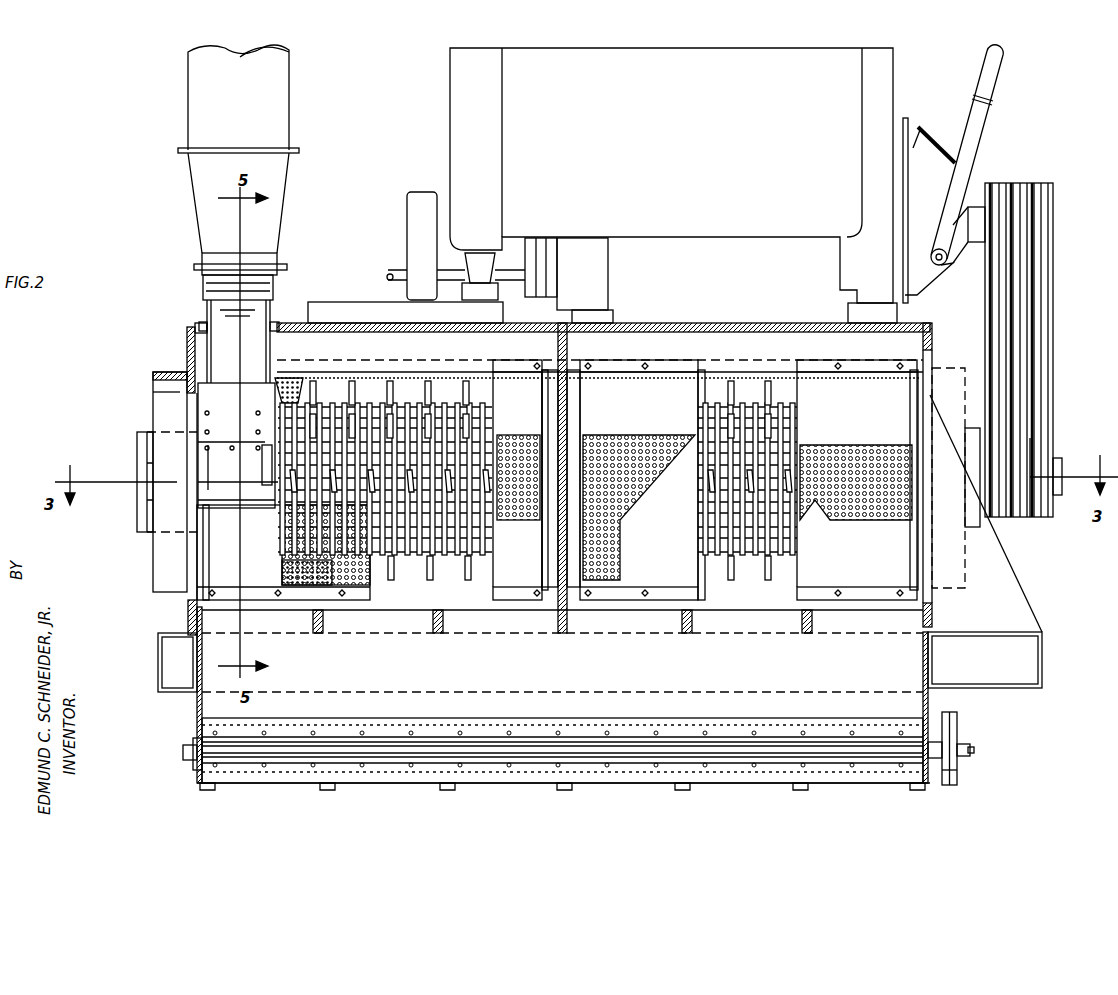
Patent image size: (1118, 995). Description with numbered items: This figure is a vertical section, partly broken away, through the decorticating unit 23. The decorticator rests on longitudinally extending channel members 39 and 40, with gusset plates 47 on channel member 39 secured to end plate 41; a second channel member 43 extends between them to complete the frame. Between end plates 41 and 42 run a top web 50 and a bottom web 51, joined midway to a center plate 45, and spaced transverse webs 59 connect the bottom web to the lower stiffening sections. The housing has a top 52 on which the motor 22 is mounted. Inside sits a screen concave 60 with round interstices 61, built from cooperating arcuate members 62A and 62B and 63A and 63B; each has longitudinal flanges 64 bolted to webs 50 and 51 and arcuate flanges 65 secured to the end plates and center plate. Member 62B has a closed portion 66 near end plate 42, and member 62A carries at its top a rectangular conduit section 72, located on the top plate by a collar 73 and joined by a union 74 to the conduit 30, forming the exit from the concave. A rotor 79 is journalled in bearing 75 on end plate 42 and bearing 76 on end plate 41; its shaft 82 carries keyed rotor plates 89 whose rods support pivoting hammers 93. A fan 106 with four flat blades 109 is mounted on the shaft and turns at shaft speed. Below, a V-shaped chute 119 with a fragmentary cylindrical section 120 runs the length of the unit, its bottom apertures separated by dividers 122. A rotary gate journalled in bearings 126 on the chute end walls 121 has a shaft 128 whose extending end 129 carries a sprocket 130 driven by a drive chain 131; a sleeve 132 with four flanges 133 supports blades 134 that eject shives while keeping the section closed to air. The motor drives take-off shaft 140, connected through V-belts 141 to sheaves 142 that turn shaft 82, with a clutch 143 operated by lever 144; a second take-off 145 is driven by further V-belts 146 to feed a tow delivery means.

The motor 22 is at (679, 185).
The decorticating unit 23 is at (752, 322).
The conduit 30 is at (290, 118).
The channel member 39 is at (1043, 657).
The channel member 40 is at (157, 670).
The end plate 41 is at (935, 352).
The end plate 42 is at (185, 340).
The channel member 43 is at (565, 690).
The center plate 45 is at (569, 348).
The gusset plate 47 is at (1013, 588).
The top web 50 is at (853, 340).
The bottom web 51 is at (779, 596).
The top 52 is at (697, 323).
The transverse web 59 is at (323, 622).
The screen concave 60 is at (857, 480).
The interstices 61 is at (515, 438).
The arcuate member 62A is at (297, 386).
The arcuate member 62B is at (517, 480).
The arcuate member 63A is at (710, 388).
The arcuate member 63B is at (639, 480).
The longitudinal flange 64 is at (478, 360).
The arcuate flange 65 is at (210, 540).
The closed portion 66 is at (283, 552).
The conduit section 72 is at (272, 290).
The collar 73 is at (270, 313).
The union 74 is at (285, 265).
The bearing 75 is at (150, 530).
The bearing 76 is at (970, 427).
The rotor 79 is at (403, 408).
The shaft 82 is at (1050, 458).
The rotor plate 89 is at (440, 396).
The hammer 93 is at (383, 385).
The fan 106 is at (222, 470).
The fan blade 109 is at (250, 380).
The chute 119 is at (562, 651).
The fragmentary cylindrical section 120 is at (197, 784).
The end wall 121 is at (935, 682).
The divider 122 is at (330, 790).
The bearing 126 is at (190, 766).
The shaft 128 is at (182, 752).
The extending end 129 is at (976, 750).
The sprocket 130 is at (958, 774).
The drive chain 131 is at (960, 726).
The sleeve 132 is at (625, 745).
The flange 133 is at (640, 765).
The blade 134 is at (790, 748).
The take-off shaft 140 is at (975, 207).
The V-belts 141 is at (1053, 283).
The sheave 142 is at (1032, 438).
The clutch 143 is at (921, 126).
The lever 144 is at (997, 72).
The second take-off 145 is at (392, 270).
The V-belts 146 is at (548, 270).